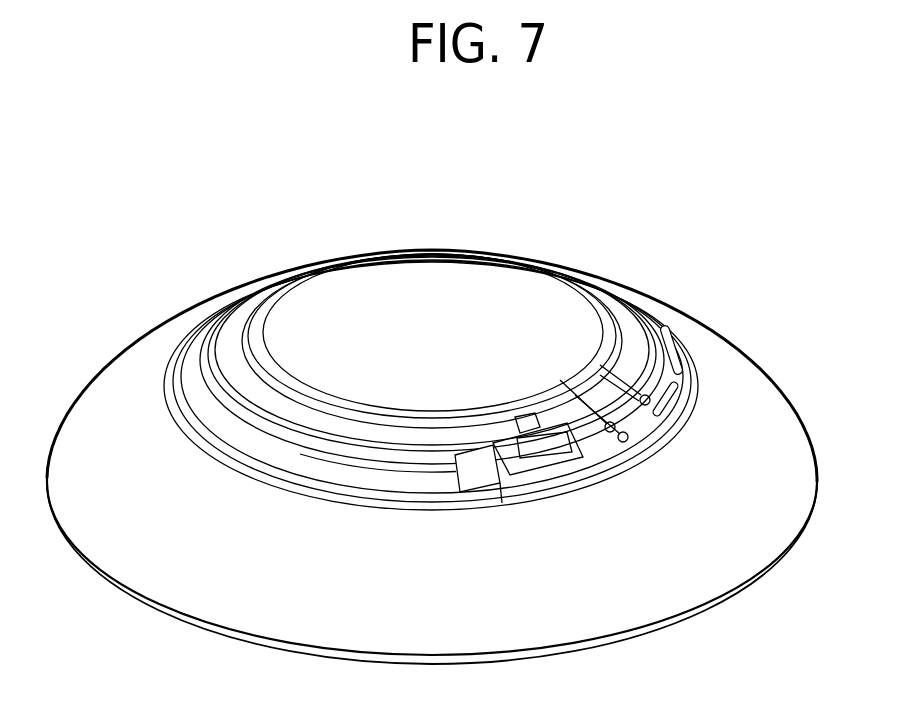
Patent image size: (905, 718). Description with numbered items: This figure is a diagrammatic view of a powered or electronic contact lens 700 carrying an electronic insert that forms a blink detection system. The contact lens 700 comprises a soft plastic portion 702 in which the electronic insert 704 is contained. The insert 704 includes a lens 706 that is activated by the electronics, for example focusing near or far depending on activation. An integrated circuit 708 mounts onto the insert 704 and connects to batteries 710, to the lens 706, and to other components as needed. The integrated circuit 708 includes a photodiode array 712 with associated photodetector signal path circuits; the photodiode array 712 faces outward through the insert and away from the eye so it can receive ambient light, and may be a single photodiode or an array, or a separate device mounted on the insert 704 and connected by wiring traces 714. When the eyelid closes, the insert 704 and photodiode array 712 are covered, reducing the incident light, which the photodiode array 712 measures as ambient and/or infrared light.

The contact lens 700 is at (432, 478).
The soft plastic portion 702 is at (217, 551).
The electronic insert 704 is at (628, 472).
The lens 706 is at (408, 305).
The integrated circuit 708 is at (645, 424).
The batteries 710 is at (251, 448).
The photodiode array 712 is at (655, 388).
The wiring traces 714 is at (556, 478).